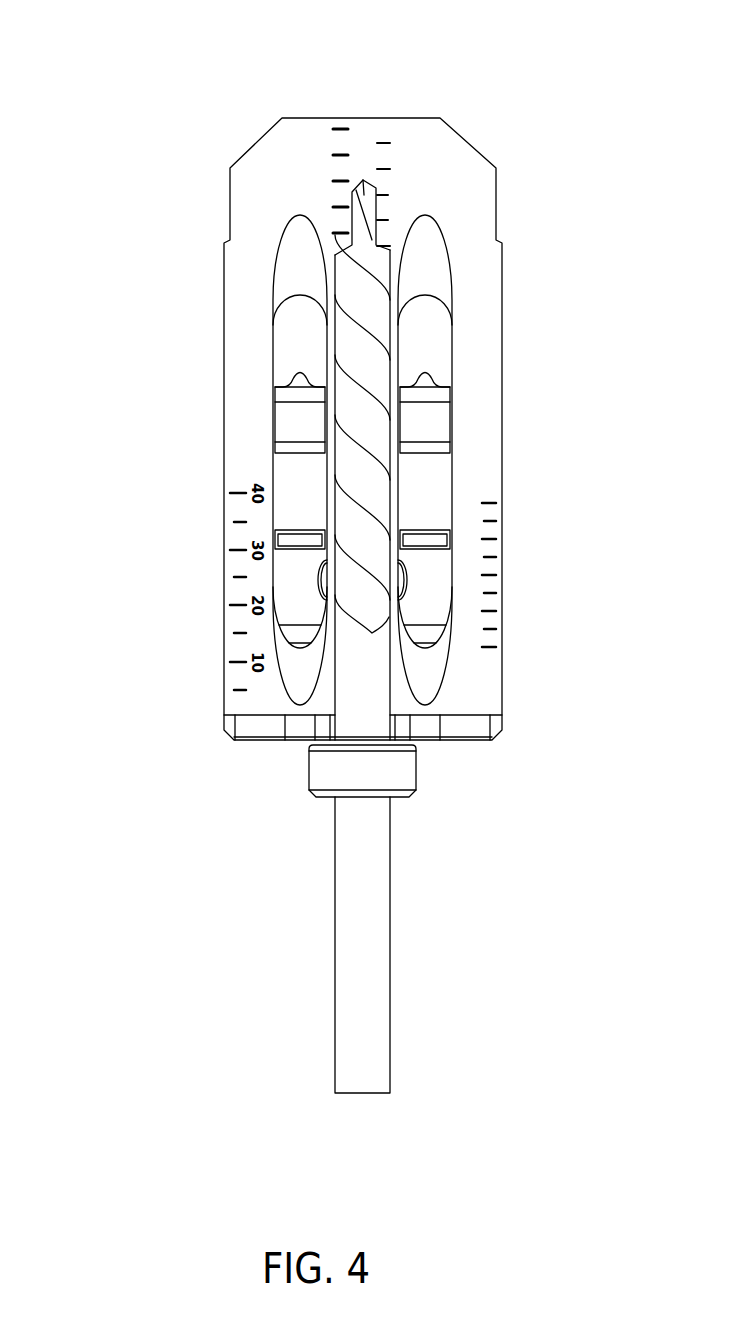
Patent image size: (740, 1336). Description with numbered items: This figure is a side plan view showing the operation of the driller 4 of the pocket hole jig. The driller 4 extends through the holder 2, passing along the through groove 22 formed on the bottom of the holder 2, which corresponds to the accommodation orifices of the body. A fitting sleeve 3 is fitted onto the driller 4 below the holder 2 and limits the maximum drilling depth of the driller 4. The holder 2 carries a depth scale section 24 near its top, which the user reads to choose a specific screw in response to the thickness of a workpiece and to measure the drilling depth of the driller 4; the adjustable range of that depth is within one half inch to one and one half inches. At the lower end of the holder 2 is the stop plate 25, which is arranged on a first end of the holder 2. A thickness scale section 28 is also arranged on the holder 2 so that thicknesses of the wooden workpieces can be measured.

The holder 2 is at (224, 375).
The fitting sleeve 3 is at (416, 770).
The driller 4 is at (389, 945).
The through groove 22 is at (291, 265).
The depth scale section 24 is at (345, 128).
The stop plate 25 is at (263, 742).
The thickness scale section 28 is at (496, 557).